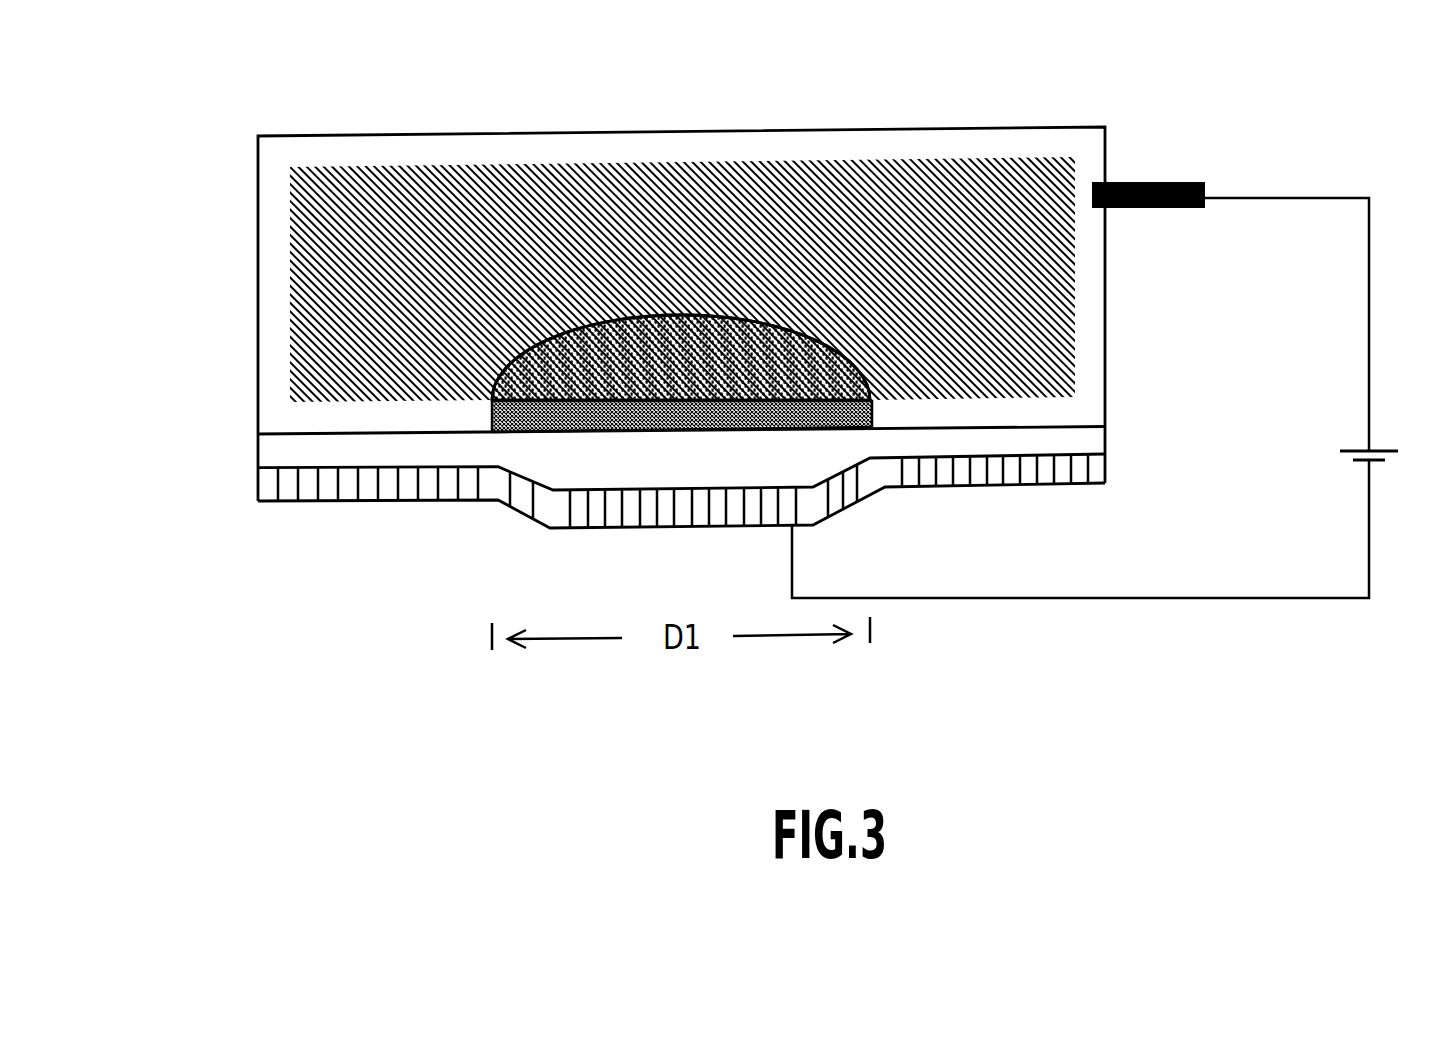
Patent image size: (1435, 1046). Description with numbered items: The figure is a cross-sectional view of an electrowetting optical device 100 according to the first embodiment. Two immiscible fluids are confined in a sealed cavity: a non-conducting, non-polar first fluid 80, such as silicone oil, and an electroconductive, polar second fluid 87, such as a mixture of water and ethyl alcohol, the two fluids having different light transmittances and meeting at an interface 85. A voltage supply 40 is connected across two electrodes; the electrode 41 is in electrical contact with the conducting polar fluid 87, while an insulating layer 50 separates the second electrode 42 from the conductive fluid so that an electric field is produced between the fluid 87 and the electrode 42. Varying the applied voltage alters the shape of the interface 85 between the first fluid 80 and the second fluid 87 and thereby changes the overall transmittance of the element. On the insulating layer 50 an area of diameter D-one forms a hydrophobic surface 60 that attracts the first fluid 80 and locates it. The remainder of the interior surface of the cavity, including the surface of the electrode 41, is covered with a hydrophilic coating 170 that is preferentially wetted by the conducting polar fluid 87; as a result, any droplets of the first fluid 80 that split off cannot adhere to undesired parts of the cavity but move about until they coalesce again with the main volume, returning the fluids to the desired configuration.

The device 100 is at (1218, 657).
The hydrophilic coating 170 is at (278, 278).
The second fluid 87 is at (886, 191).
The interface 85 is at (522, 346).
The first fluid 80 is at (813, 373).
The hydrophobic surface 60 is at (535, 428).
The insulating layer 50 is at (1093, 435).
The second electrode 42 is at (845, 493).
The electrode 41 is at (1202, 178).
The voltage supply 40 is at (1375, 447).